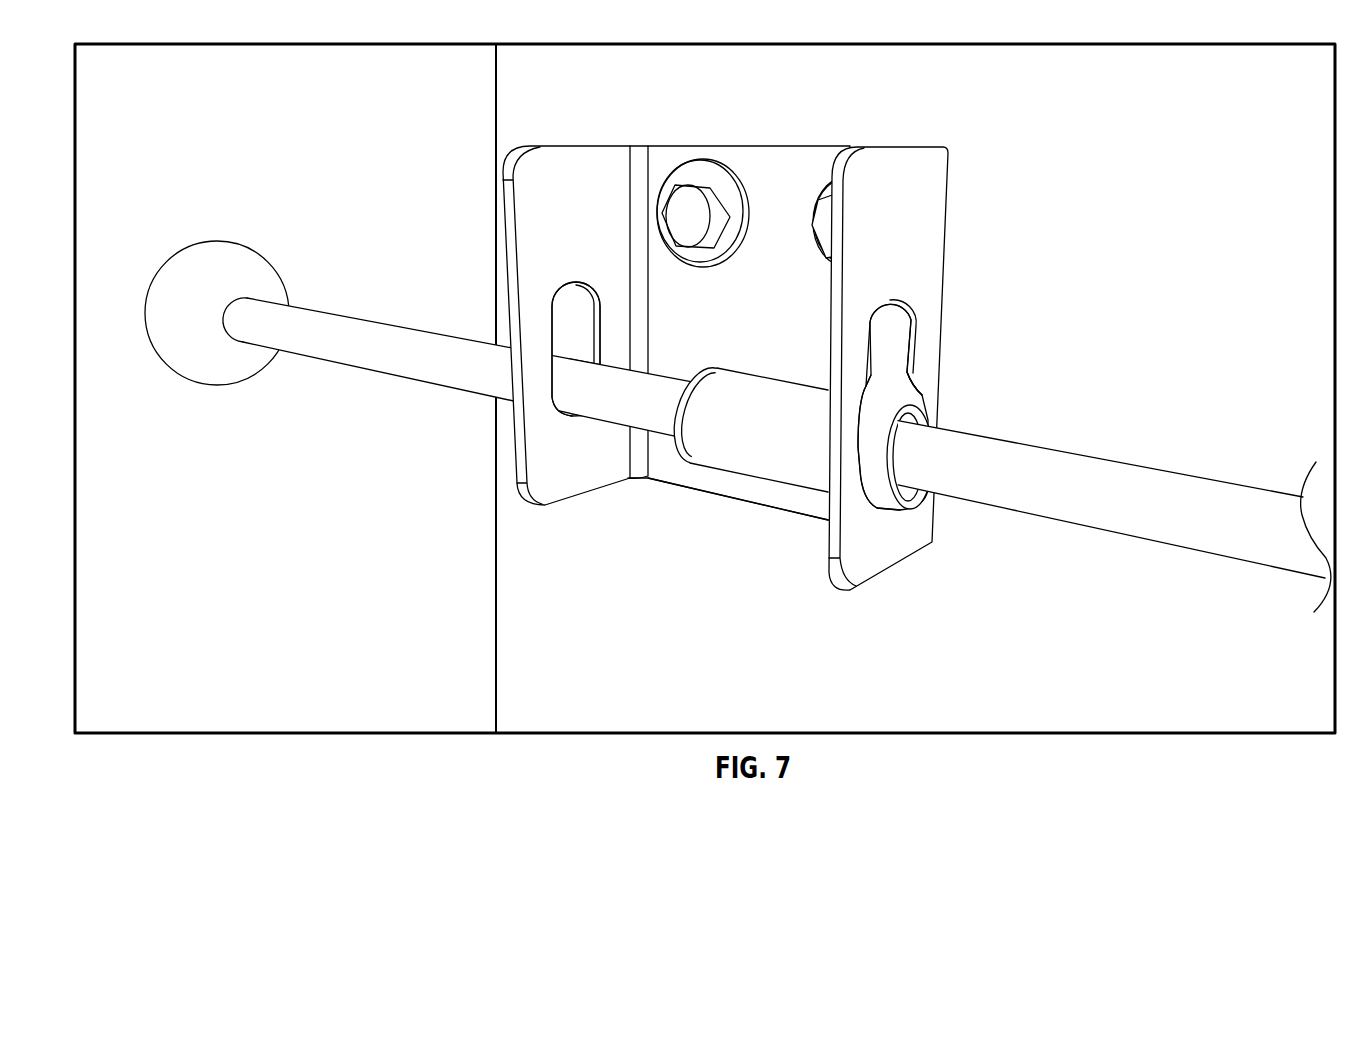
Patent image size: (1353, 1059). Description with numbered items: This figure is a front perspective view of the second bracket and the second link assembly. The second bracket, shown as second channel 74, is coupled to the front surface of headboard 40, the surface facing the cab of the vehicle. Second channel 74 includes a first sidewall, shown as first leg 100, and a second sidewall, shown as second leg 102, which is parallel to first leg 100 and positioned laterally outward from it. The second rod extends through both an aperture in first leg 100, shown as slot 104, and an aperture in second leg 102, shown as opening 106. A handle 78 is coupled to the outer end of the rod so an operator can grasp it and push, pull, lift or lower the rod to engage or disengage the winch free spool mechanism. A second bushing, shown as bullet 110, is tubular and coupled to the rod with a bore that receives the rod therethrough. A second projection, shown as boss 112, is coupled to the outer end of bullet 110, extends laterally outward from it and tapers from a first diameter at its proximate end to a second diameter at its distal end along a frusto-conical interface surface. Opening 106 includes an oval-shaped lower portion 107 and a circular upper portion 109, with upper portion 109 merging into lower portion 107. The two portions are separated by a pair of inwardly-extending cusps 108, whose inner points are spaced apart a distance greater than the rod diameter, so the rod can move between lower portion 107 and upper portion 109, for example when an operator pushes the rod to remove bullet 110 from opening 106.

The headboard 40 is at (1159, 209).
The second channel 74 is at (773, 170).
The handle 78 is at (247, 263).
The first leg 100 is at (571, 170).
The second leg 102 is at (915, 225).
The slot 104 is at (576, 323).
The opening 106 is at (884, 386).
The lower portion 107 is at (919, 400).
The cusps 108 is at (871, 377).
The upper portion 109 is at (886, 320).
The bullet 110 is at (739, 402).
The boss 112 is at (692, 381).